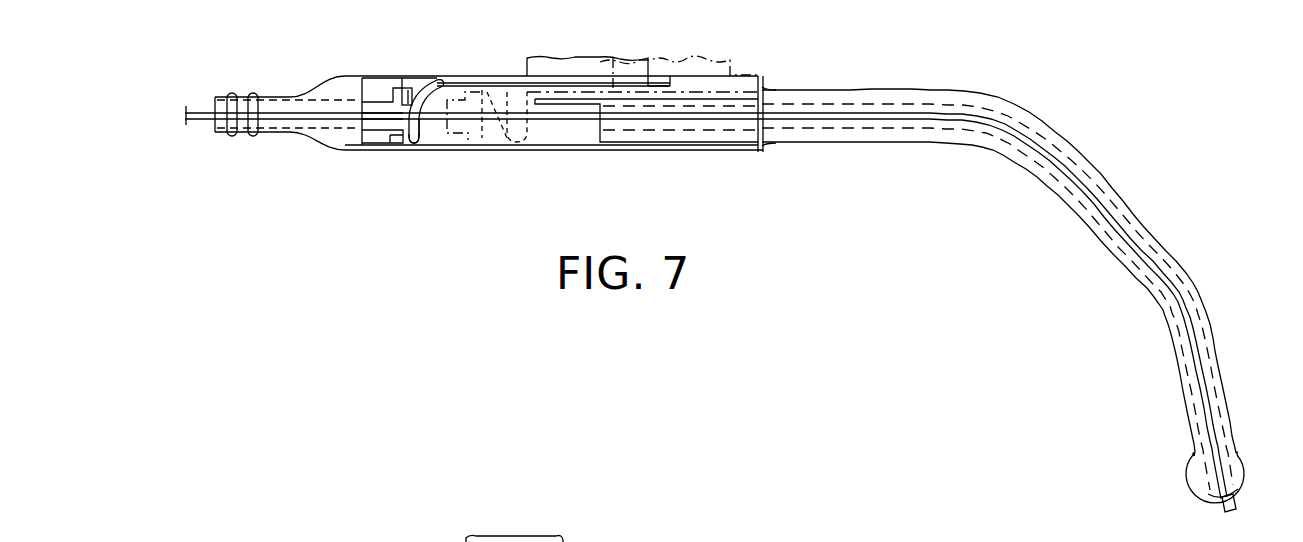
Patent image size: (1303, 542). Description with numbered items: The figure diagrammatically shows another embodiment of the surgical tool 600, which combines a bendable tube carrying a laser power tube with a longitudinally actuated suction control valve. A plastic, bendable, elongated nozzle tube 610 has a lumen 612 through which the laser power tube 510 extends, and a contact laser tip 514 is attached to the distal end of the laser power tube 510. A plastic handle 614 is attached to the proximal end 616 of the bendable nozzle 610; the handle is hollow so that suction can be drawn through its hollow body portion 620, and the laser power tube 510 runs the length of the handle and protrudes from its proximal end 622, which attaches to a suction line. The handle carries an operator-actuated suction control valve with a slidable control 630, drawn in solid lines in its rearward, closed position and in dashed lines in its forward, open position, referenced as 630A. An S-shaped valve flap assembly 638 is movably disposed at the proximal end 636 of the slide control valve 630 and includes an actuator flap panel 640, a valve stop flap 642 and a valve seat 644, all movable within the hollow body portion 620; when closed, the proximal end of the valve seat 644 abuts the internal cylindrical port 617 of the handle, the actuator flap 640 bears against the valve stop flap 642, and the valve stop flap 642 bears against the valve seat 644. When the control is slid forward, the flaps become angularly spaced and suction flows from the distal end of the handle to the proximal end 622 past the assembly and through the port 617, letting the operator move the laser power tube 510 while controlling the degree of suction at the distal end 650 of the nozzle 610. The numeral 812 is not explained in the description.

The laser power tube 510 is at (917, 123).
The contact laser tip 514 is at (1236, 504).
The surgical tool 600 is at (742, 150).
The nozzle tube 610 is at (920, 90).
The lumen 612 is at (1003, 117).
The handle 614 is at (661, 151).
The proximal end of bendable nozzle 616 is at (780, 96).
The internal cylindrical port 617 is at (357, 97).
The hollow body portion 620 is at (563, 137).
The proximal end of handle 622 is at (217, 97).
The slidable control 630 is at (597, 58).
The open valve 630A is at (700, 46).
The proximal end of slide control valve 636 is at (436, 80).
The S-shaped valve flap assembly 638 is at (417, 146).
The actuator flap panel 640 is at (424, 127).
The valve stop flap 642 is at (400, 118).
The valve seat 644 is at (401, 90).
The distal end of nozzle 650 is at (1210, 497).
The element 812 is at (404, 540).